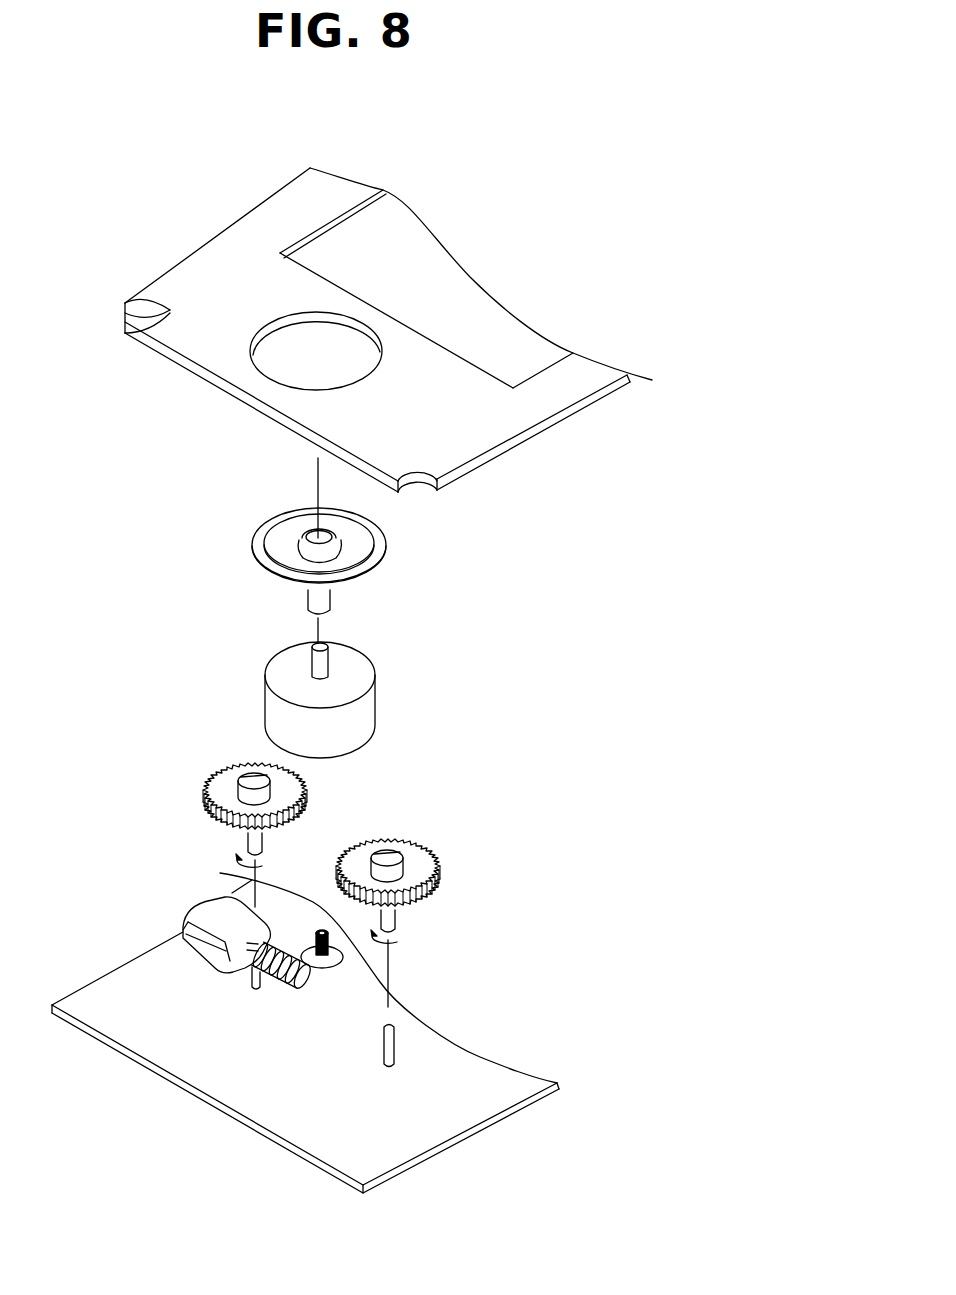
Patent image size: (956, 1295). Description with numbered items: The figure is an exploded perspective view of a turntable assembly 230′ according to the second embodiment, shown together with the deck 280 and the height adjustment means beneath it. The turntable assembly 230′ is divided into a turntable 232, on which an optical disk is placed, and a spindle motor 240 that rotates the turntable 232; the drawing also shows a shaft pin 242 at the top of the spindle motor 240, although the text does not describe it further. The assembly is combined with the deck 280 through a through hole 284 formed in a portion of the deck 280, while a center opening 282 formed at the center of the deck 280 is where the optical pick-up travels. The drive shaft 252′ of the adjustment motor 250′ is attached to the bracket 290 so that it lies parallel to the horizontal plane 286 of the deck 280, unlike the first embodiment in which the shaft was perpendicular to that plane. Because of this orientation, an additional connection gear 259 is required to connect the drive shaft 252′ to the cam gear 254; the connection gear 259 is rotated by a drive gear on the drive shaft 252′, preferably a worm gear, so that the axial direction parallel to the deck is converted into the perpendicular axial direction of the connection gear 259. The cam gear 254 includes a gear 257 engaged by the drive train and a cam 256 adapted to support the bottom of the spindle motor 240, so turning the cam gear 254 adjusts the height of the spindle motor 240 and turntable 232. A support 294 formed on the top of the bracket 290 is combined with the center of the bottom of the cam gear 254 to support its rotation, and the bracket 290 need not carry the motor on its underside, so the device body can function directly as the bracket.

The turntable assembly 230′ is at (602, 165).
The deck 280 is at (572, 413).
The center opening 282 is at (464, 313).
The through hole 284 is at (312, 351).
The horizontal plane 286 is at (480, 433).
The turntable 232 is at (362, 550).
The shaft pin 242 is at (328, 663).
The spindle motor 240 is at (368, 708).
The cam 256 is at (242, 792).
The gear 257 is at (225, 806).
The cam gear 254 is at (428, 850).
The adjustment motor 250′ is at (207, 910).
The drive shaft 252′ is at (180, 928).
The connection gear 259 is at (338, 958).
The support 294 is at (393, 1050).
The bracket 290 is at (440, 1122).